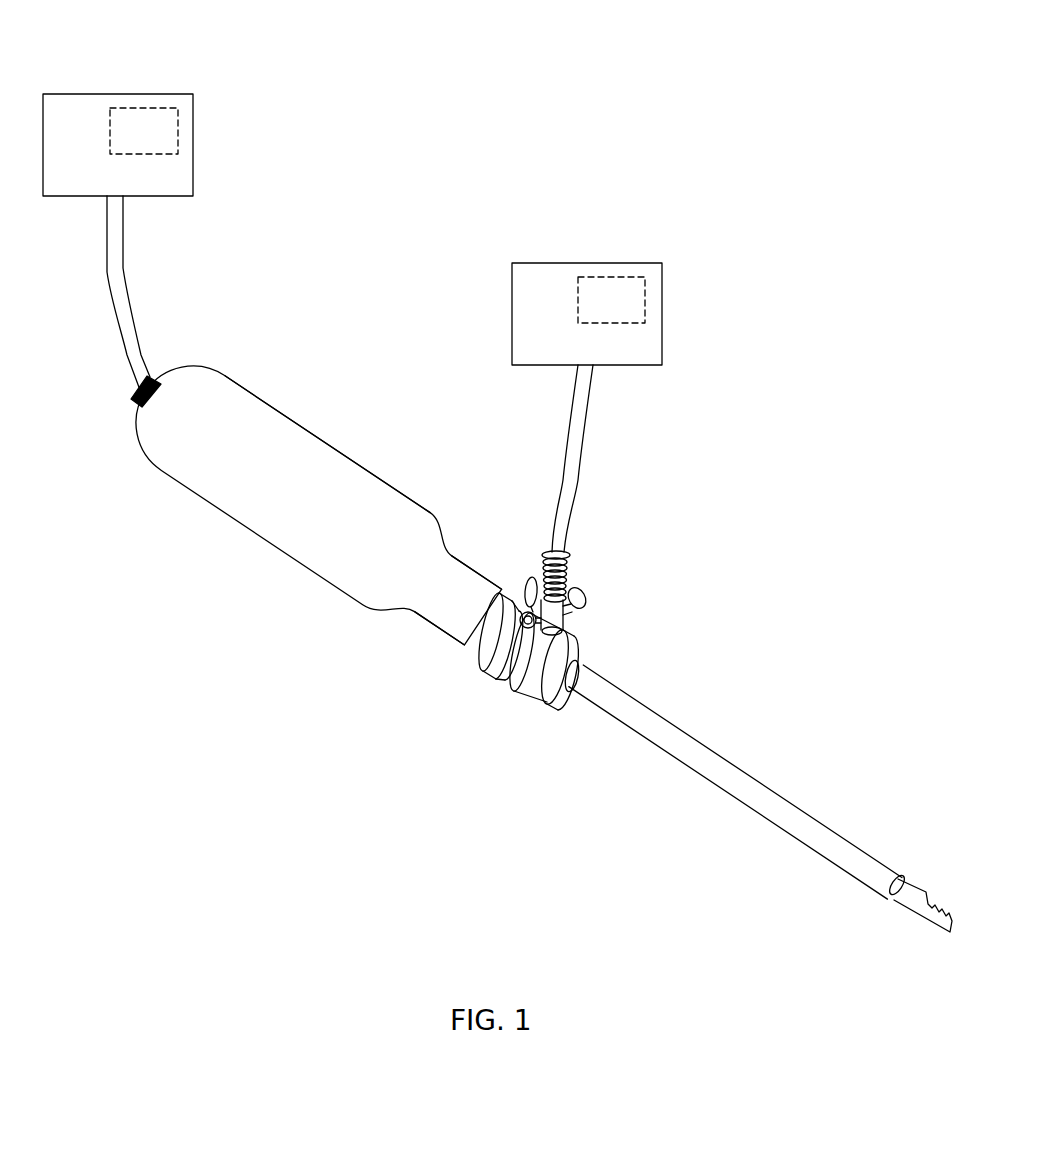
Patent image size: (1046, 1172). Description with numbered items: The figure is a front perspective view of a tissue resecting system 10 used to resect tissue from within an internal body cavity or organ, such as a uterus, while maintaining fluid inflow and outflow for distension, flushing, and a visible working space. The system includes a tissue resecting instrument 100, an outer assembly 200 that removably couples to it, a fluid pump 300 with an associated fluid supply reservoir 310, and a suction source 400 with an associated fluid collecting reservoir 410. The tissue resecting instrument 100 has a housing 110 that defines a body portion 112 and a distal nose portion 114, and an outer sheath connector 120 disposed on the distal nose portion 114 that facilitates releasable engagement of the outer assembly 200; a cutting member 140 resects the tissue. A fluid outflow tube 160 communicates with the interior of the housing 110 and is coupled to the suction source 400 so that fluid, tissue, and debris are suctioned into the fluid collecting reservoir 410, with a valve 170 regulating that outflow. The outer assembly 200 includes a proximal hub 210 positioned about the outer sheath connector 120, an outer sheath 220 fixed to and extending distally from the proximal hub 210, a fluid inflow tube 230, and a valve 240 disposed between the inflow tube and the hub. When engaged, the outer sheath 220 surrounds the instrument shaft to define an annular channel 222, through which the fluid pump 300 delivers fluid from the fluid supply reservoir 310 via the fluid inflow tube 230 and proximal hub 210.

The tissue resecting system 10 is at (400, 783).
The tissue resecting instrument 100 is at (318, 521).
The housing 110 is at (247, 497).
The body portion 112 is at (243, 400).
The distal nose portion 114 is at (435, 608).
The outer sheath connector 120 is at (478, 647).
The cutting member 140 is at (952, 941).
The fluid outflow tube 160 is at (122, 292).
The valve 170 is at (157, 378).
The outer assembly 200 is at (734, 761).
The proximal hub 210 is at (525, 673).
The outer sheath 220 is at (643, 730).
The annular channel 222 is at (905, 880).
The fluid inflow tube 230 is at (558, 506).
The valve 240 is at (565, 612).
The fluid pump 300 is at (550, 262).
The fluid supply reservoir 310 is at (613, 302).
The suction source 400 is at (80, 93).
The fluid collecting reservoir 410 is at (143, 133).